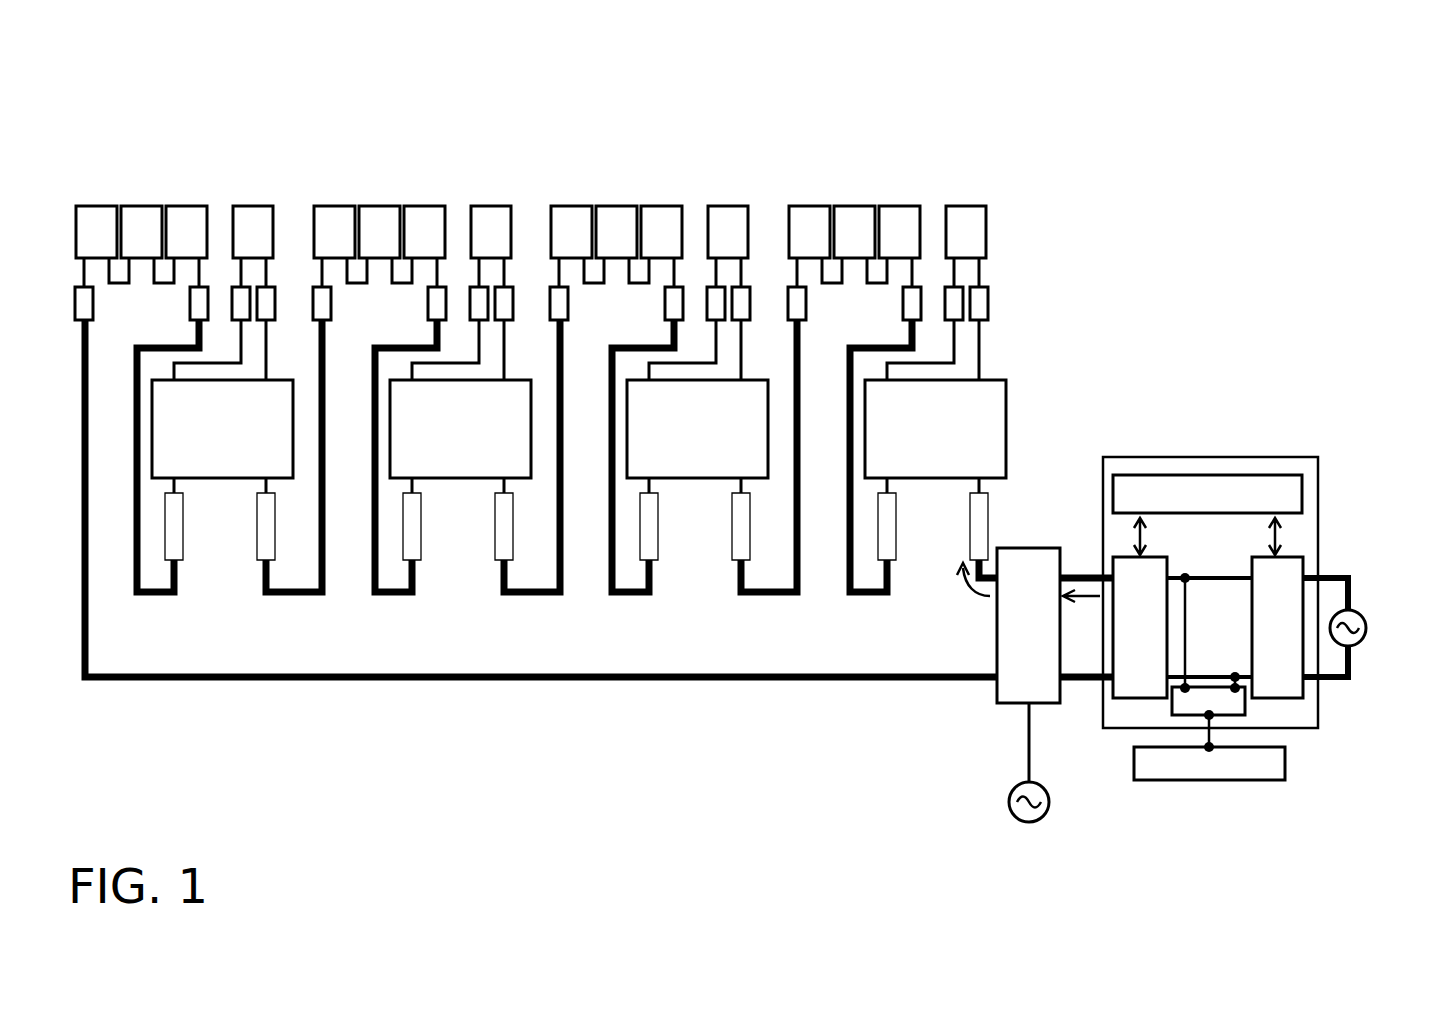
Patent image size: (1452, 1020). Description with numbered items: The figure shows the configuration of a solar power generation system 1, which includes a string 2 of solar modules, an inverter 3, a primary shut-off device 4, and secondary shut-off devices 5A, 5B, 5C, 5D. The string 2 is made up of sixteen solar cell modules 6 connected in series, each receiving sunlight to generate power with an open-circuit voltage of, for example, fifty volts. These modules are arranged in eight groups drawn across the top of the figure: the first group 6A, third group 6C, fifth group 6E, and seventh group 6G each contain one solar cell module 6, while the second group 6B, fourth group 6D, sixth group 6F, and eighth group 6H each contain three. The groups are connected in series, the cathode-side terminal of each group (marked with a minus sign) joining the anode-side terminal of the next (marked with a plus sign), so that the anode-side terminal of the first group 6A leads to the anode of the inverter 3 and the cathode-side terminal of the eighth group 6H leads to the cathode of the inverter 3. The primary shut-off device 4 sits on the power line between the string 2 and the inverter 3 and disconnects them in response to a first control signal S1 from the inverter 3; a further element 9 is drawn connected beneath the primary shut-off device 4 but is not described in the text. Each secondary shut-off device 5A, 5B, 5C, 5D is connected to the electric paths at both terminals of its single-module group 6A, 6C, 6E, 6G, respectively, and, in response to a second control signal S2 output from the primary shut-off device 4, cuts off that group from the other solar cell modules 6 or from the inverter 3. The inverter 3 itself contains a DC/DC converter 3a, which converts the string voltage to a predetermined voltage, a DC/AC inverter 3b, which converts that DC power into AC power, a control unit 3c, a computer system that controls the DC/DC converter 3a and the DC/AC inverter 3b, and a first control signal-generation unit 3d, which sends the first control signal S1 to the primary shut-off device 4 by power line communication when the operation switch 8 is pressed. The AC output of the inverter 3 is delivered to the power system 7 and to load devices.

The solar power generation system 1 is at (1158, 162).
The string of solar modules 2 is at (83, 85).
The inverter 3 is at (1200, 457).
The DC/DC converter 3a is at (1142, 699).
The DC/AC inverter 3b is at (1287, 700).
The control unit 3c is at (1302, 490).
The first control signal-generation unit 3d is at (1235, 715).
The primary shut-off device 4 is at (1030, 548).
The secondary shut-off device 5A is at (935, 429).
The secondary shut-off device 5B is at (697, 429).
The secondary shut-off device 5C is at (460, 429).
The secondary shut-off device 5D is at (222, 429).
The solar cell module 6 is at (530, 202).
The first group 6A is at (964, 202).
The second group 6B is at (854, 202).
The third group 6C is at (726, 202).
The fourth group 6D is at (616, 202).
The fifth group 6E is at (489, 202).
The sixth group 6F is at (379, 202).
The seventh group 6G is at (251, 202).
The eighth group 6H is at (141, 202).
The power system 7 is at (1366, 628).
The operation switch 8 is at (1212, 780).
The AC power source 9 is at (1029, 822).
The first control signal S1 is at (1081, 611).
The second control signal S2 is at (955, 579).